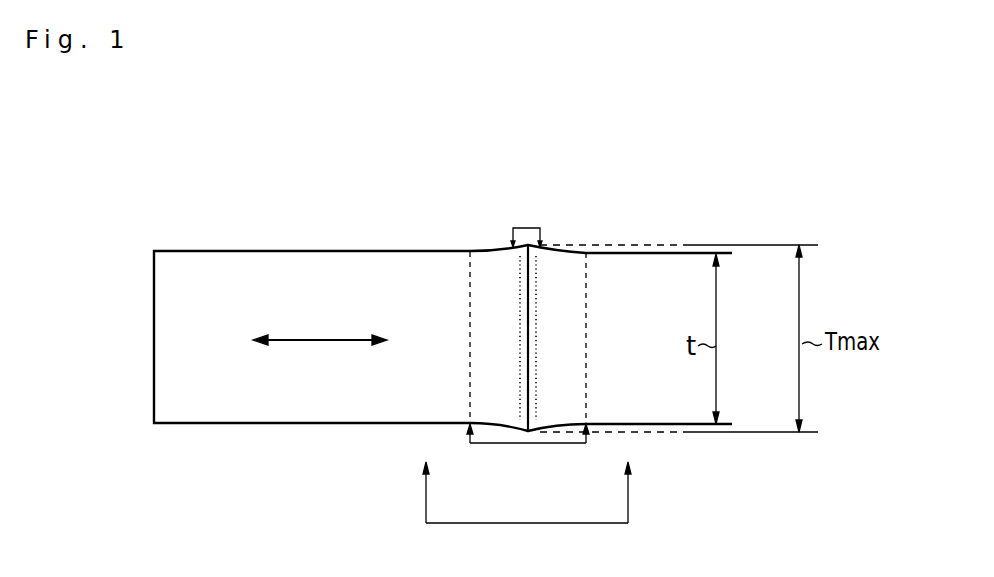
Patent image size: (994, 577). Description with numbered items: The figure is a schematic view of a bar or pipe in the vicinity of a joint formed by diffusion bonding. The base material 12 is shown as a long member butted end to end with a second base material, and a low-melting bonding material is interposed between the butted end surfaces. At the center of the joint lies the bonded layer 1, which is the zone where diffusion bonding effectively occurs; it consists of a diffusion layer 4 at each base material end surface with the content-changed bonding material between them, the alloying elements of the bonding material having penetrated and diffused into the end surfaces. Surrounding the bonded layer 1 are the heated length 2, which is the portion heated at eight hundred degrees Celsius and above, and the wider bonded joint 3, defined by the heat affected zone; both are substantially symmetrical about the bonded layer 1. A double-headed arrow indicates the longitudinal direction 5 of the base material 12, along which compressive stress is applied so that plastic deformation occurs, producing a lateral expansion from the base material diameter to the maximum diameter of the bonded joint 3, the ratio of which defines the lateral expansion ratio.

The base material 12 is at (217, 282).
The bonded layer 1 is at (530, 228).
The diffusion layer 4 is at (535, 292).
The longitudinal direction 5 is at (330, 340).
The heated length 2 is at (552, 443).
The bonded joint 3 is at (520, 523).